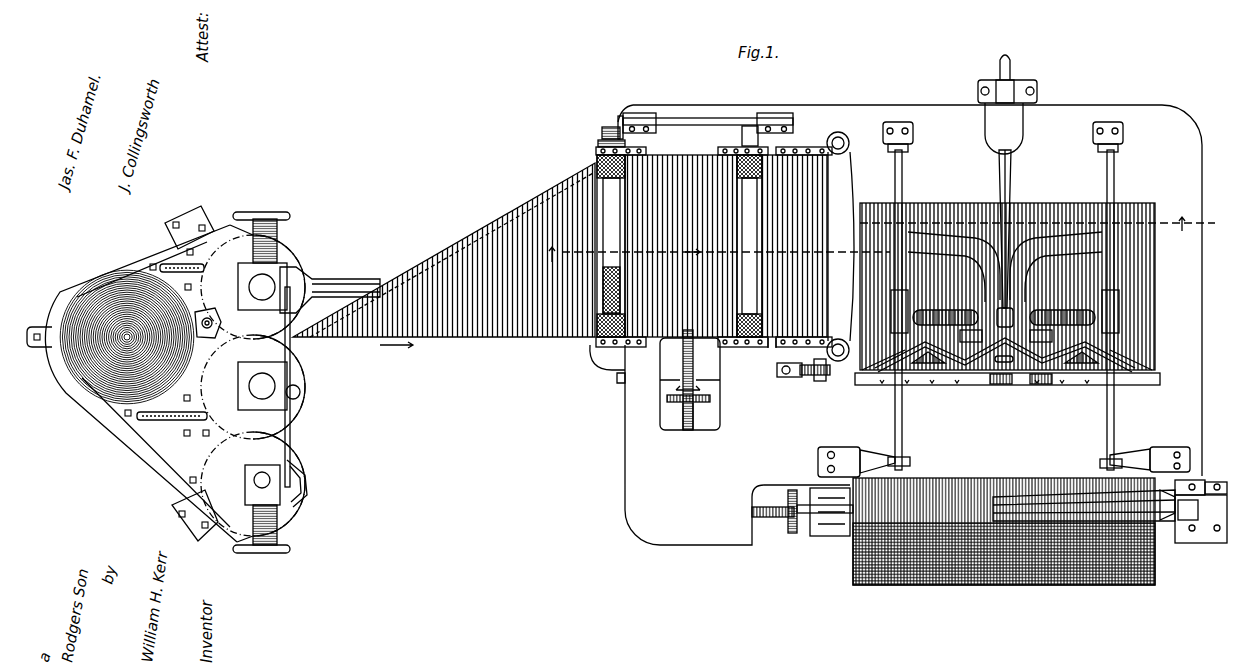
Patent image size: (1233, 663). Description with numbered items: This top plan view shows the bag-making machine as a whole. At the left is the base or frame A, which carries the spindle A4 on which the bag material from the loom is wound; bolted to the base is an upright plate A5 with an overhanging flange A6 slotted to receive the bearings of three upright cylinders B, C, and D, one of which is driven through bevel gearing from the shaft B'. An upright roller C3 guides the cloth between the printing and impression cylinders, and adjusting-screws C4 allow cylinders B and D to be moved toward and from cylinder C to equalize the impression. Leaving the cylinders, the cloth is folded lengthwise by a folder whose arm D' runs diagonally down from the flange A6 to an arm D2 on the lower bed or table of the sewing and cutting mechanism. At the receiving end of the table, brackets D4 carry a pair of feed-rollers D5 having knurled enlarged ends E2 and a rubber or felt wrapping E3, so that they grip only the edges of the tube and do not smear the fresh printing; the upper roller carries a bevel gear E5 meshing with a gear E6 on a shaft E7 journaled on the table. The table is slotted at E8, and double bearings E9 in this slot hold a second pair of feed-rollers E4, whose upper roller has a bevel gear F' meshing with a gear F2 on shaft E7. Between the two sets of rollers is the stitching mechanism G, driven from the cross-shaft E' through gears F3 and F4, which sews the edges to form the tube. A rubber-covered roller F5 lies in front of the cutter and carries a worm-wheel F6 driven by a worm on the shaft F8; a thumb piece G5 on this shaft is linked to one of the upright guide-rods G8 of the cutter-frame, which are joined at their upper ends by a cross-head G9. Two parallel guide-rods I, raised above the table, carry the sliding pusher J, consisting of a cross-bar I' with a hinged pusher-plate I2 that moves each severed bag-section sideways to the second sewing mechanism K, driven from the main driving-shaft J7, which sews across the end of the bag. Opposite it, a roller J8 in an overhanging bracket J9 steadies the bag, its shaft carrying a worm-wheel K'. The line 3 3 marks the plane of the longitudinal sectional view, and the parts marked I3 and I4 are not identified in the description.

The base or frame A is at (132, 374).
The stem or spindle A4 is at (127, 337).
The upright plate A5 is at (172, 430).
The overhanging flange A6 is at (185, 395).
The upright cylinder B is at (258, 356).
The shaft B' is at (330, 285).
The upright cylinder C is at (263, 387).
The upright roller C3 is at (208, 314).
The adjusting-screws C4 is at (261, 384).
The upright cylinder D is at (265, 487).
The arm of folder D' is at (444, 255).
The arm D2 is at (593, 352).
The brackets or hangers D4 is at (597, 146).
The rollers D5 is at (610, 246).
The cross-shaft E' is at (651, 333).
The enlarged ends E2 is at (597, 162).
The wrapping E3 is at (718, 152).
The feed-rollers E4 is at (726, 246).
The bevel gear-wheel E5 is at (604, 128).
The bevel gear E6 is at (620, 117).
The shaft E7 is at (692, 116).
The slot or recess E8 is at (780, 346).
The double boxes or bearings E9 is at (742, 347).
The bevel-gear F' is at (910, 325).
The bevel gear F2 is at (756, 115).
The gear F3 is at (667, 398).
The gear F4 is at (690, 400).
The rubber-covered roller F5 is at (865, 213).
The worm-wheel F6 is at (820, 380).
The shaft F8 is at (803, 376).
The stitching mechanism G is at (690, 384).
The block or thumb piece G5 is at (780, 378).
The upright guide-rods G8 is at (858, 128).
The cross-head G9 is at (841, 246).
The guide-rods I is at (1004, 299).
The cross-bar or frame I' is at (1005, 283).
The pusher-plate I2 is at (988, 378).
The post I3 is at (1012, 62).
The blade I4 is at (1010, 178).
The sliding pusher J is at (1038, 370).
The main driving-shaft J7 is at (765, 508).
The roller J8 is at (790, 490).
The overhanging arm or bracket J9 is at (1045, 497).
The sewing mechanism K is at (1016, 519).
The worm-wheel K' is at (1193, 525).
The section line 3 is at (877, 238).